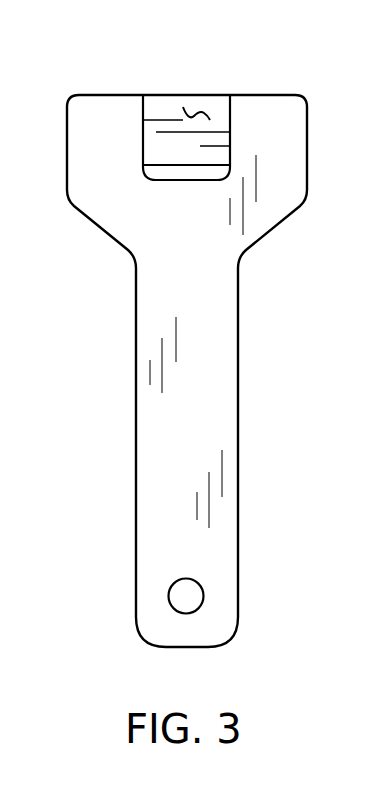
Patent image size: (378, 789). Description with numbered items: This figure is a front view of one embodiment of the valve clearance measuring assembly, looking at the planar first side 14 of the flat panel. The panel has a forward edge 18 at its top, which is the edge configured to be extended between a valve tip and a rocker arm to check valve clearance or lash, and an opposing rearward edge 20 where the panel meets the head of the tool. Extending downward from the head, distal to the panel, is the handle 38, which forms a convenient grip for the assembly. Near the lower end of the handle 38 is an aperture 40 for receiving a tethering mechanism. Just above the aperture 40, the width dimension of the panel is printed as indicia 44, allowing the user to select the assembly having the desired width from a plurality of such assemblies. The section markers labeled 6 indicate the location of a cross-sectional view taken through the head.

The first side 14 is at (198, 112).
The forward edge 18 is at (172, 95).
The rearward edge 20 is at (187, 166).
The handle 38 is at (238, 447).
The aperture 40 is at (187, 597).
The indicia 44 is at (222, 552).
The section line 6- 6 is at (60, 128).